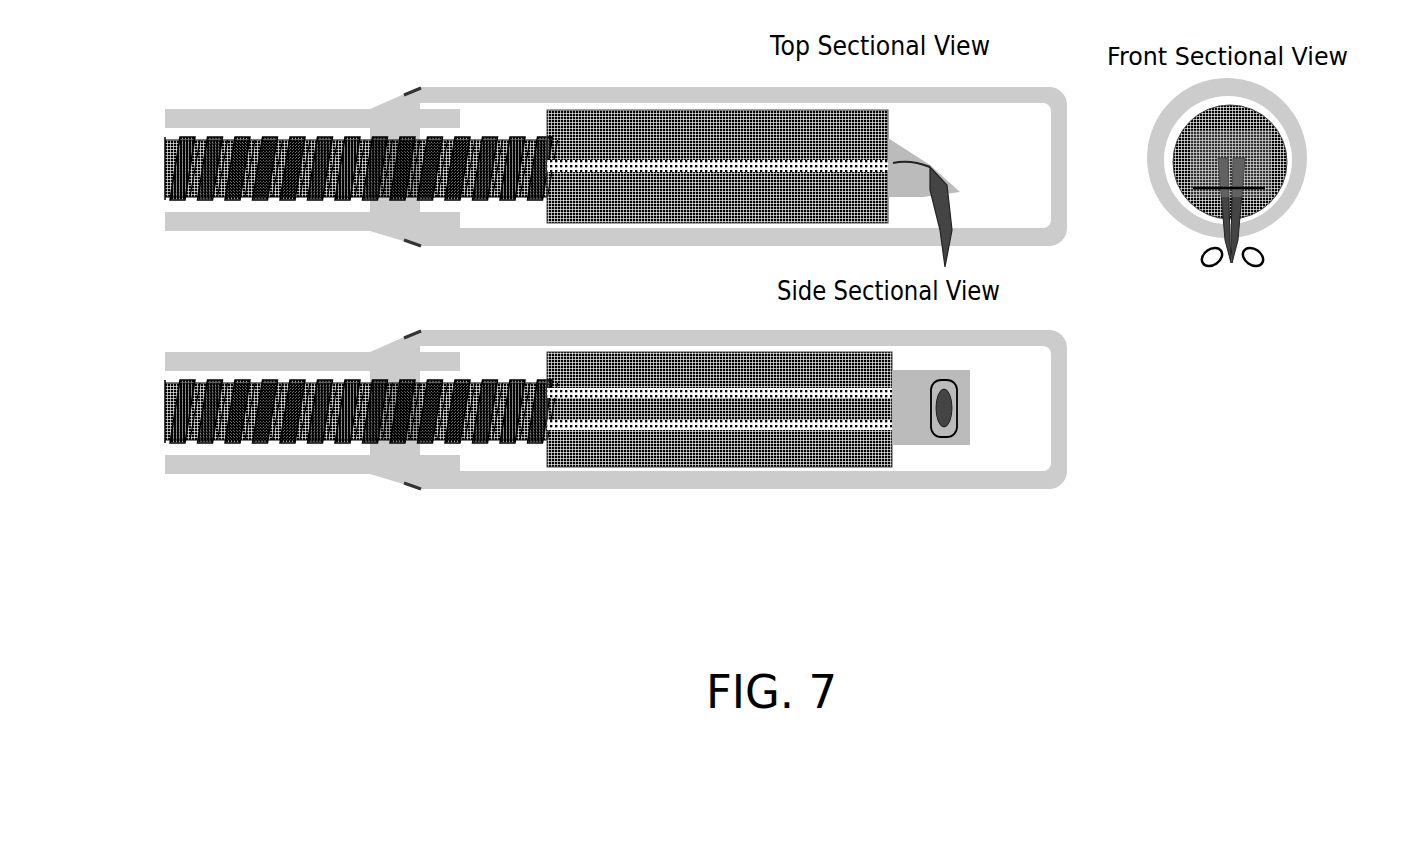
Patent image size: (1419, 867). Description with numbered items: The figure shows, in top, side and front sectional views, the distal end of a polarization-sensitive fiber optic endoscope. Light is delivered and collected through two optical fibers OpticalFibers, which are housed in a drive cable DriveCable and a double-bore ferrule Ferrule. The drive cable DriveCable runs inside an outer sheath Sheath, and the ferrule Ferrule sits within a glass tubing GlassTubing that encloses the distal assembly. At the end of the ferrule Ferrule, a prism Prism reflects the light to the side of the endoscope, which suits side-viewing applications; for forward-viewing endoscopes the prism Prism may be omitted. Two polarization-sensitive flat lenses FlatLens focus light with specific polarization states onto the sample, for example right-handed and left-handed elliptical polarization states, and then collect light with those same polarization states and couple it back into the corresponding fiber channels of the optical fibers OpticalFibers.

The sheath Sheath is at (312, 109).
The glass tubing GlassTubing is at (688, 92).
The drive cable DriveCable is at (481, 138).
The double-bore ferrule Ferrule is at (578, 110).
The optical fibers OpticalFibers is at (787, 139).
The prism Prism is at (893, 138).
The polarization-sensitive flat lens FlatLens is at (966, 190).